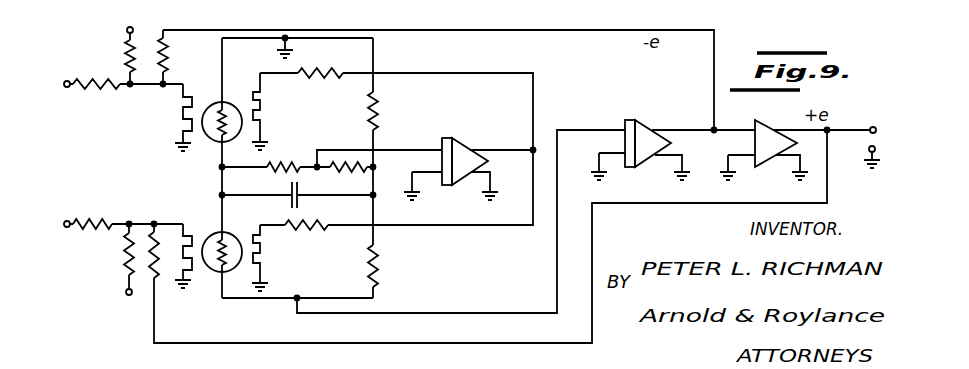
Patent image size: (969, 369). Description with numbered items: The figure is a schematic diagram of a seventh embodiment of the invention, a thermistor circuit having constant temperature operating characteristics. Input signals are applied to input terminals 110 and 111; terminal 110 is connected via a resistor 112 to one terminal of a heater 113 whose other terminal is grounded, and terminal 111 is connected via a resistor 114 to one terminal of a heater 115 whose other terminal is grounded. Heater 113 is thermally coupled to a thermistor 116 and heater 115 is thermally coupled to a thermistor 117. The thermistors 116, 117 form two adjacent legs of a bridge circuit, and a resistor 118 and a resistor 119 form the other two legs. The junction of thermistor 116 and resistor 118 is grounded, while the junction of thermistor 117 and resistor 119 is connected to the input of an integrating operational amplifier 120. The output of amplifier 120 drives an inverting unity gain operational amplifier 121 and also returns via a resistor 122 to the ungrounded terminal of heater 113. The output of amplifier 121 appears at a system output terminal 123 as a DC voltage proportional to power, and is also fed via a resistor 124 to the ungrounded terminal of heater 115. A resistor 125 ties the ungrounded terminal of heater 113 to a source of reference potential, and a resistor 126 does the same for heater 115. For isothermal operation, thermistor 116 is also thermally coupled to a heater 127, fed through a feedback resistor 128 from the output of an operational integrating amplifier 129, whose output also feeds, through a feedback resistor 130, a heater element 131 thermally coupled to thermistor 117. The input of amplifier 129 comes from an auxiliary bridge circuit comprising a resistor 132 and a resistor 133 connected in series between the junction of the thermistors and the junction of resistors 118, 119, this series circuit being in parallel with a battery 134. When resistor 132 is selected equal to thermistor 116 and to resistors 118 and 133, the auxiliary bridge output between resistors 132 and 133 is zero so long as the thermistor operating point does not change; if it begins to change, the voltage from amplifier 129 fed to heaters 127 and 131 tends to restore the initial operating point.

The input terminal 110 is at (68, 80).
The input terminal 111 is at (67, 221).
The resistor 112 is at (85, 90).
The heater 113 is at (178, 112).
The resistor 114 is at (82, 221).
The heater 115 is at (188, 265).
The thermistor 116 is at (208, 105).
The thermistor 117 is at (209, 234).
The resistor 118 is at (385, 116).
The resistor 119 is at (382, 276).
The integrating operational amplifier 120 is at (645, 120).
The inverting unity gain operational amplifier 121 is at (784, 109).
The resistor 122 is at (170, 52).
The system output terminal 123 is at (871, 128).
The resistor 124 is at (152, 280).
The resistor 125 is at (125, 52).
The resistor 126 is at (124, 246).
The heater 127 is at (266, 103).
The feedback resistor 128 is at (303, 68).
The operational integrating amplifier 129 is at (461, 138).
The feedback resistor 130 is at (312, 226).
The heater element 131 is at (266, 268).
The resistor 132 is at (280, 163).
The resistor 133 is at (337, 178).
The battery 134 is at (291, 190).